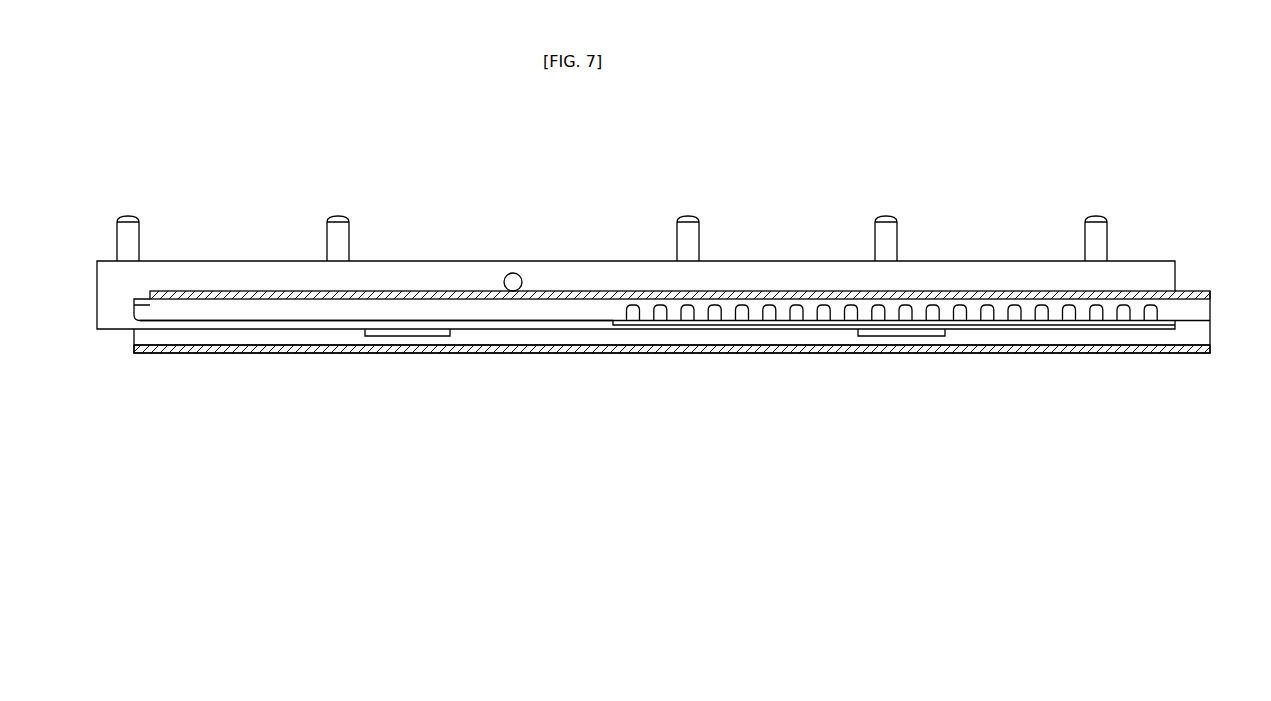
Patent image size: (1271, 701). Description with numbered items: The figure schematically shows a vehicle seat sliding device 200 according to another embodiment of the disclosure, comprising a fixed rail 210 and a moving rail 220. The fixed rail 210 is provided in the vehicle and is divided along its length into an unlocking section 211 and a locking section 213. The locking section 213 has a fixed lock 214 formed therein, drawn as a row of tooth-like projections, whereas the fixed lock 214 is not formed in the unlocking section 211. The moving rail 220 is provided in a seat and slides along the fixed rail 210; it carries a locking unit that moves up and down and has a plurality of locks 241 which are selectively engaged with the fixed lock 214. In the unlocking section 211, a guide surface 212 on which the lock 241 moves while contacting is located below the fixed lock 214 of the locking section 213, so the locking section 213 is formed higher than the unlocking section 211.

The vehicle seat sliding device 200 is at (138, 150).
The fixed rail 210 is at (237, 338).
The unlocking section 211 is at (597, 363).
The guide surface 212 is at (548, 322).
The locking section 213 is at (1157, 363).
The fixed lock 214 is at (732, 306).
The moving rail 220 is at (228, 277).
The lock 241 is at (675, 312).